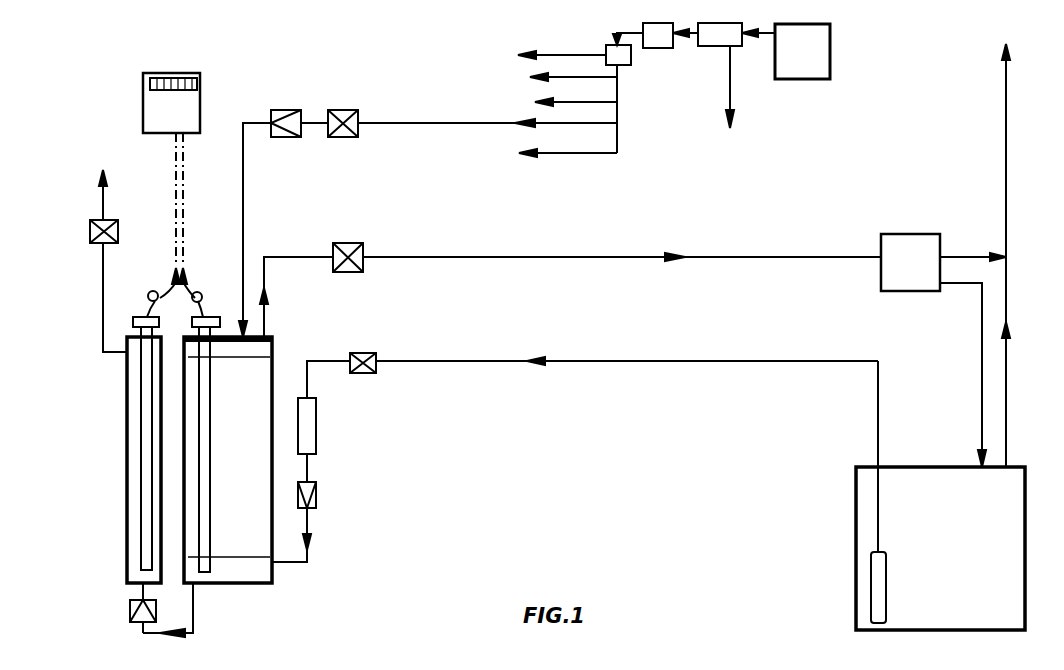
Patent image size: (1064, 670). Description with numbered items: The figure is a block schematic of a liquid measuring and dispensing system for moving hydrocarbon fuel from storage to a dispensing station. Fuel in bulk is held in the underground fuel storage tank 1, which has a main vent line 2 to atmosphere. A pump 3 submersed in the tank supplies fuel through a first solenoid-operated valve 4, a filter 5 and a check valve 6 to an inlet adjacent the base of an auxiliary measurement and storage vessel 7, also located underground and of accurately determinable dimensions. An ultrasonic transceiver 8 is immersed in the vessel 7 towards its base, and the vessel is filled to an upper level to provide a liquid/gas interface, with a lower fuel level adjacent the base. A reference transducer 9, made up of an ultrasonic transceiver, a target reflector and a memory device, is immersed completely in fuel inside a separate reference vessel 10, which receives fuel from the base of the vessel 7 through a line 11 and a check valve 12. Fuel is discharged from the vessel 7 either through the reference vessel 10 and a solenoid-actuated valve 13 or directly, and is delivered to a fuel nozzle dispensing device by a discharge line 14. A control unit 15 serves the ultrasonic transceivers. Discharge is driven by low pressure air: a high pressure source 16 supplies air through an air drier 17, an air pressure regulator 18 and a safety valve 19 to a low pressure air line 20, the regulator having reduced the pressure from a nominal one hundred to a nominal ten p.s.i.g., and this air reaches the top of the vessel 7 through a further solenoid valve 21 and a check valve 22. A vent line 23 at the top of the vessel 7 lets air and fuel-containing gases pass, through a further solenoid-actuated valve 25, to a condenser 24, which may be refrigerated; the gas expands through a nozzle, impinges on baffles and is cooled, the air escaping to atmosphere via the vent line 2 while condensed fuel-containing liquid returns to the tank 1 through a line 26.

The underground fuel storage tank 1 is at (1026, 548).
The main vent line 2 is at (1008, 432).
The pump 3 is at (870, 588).
The first solenoid-operated valve 4 is at (362, 352).
The filter 5 is at (317, 432).
The check valve 6 is at (317, 498).
The auxiliary measurement and storage vessel 7 is at (273, 378).
The ultrasonic transceiver 8 is at (211, 432).
The reference transducer 9 is at (140, 430).
The reference vessel 10 is at (127, 540).
The line 11 is at (195, 612).
The check valve 12 is at (129, 612).
The solenoid-actuated valve 13 is at (99, 244).
The discharge line 14 is at (105, 200).
The control unit 15 is at (201, 93).
The high pressure source 16 is at (803, 80).
The air drier 17 is at (713, 47).
The air pressure regulator 18 is at (661, 49).
The safety valve 19 is at (622, 66).
The low pressure air line 20 is at (437, 125).
The further solenoid valve 21 is at (340, 138).
The check valve 22 is at (277, 110).
The vent line 23 is at (627, 259).
The condenser 24 is at (912, 233).
The further solenoid-actuated valve 25 is at (364, 273).
The line 26 is at (981, 365).